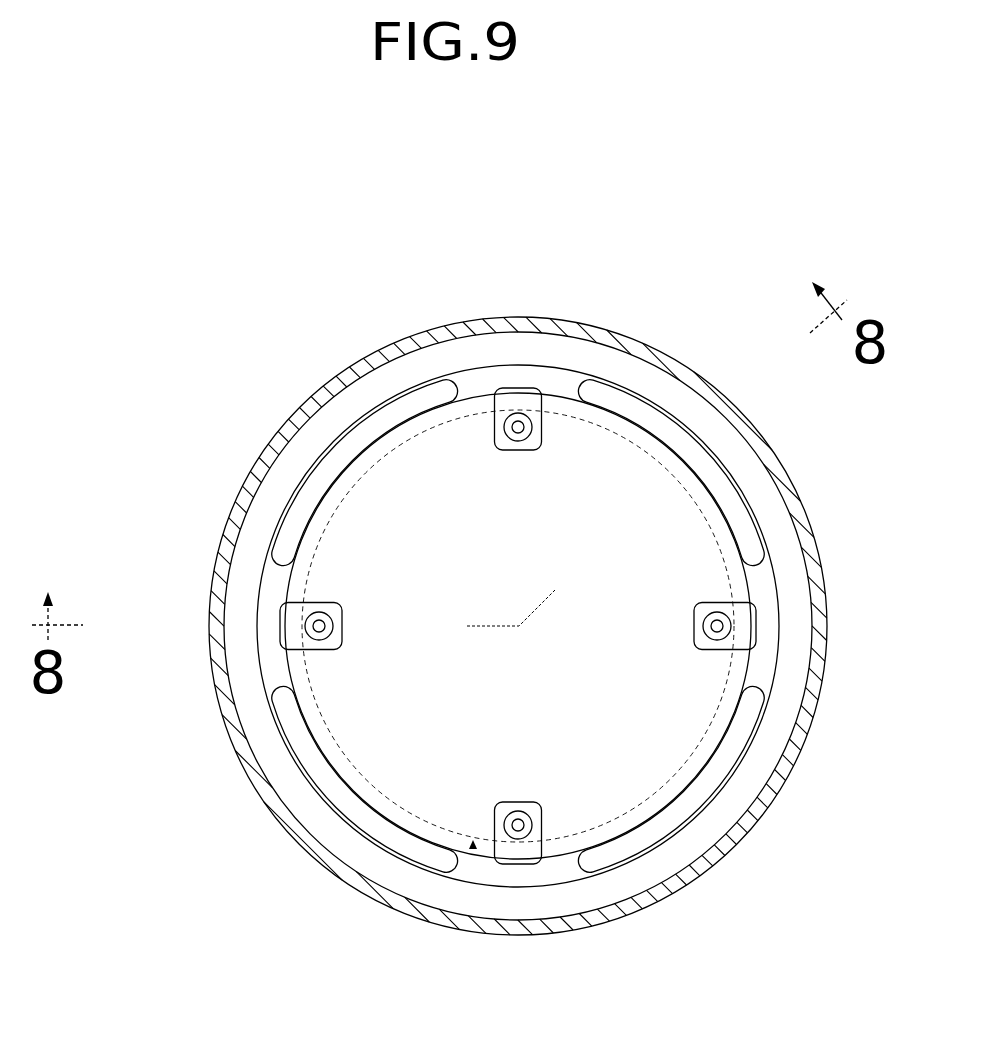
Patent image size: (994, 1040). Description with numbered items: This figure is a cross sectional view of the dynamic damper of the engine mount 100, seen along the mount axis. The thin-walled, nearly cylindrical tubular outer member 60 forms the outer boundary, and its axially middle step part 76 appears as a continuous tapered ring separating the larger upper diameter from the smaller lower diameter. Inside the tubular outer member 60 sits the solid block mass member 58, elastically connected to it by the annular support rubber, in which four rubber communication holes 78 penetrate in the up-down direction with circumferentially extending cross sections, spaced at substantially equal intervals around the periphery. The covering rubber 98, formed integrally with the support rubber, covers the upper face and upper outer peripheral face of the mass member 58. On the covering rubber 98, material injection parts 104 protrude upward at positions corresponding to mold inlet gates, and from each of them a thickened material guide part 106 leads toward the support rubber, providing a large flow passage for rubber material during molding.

The engine mount 100 is at (297, 325).
The tubular outer member 60 is at (284, 842).
The step part 76 is at (265, 735).
The rubber communication hole 78 is at (300, 482).
The covering rubber 98 is at (690, 522).
The material injection part 104 is at (521, 426).
The material guide part 106 is at (517, 404).
The mass member 58 is at (473, 845).